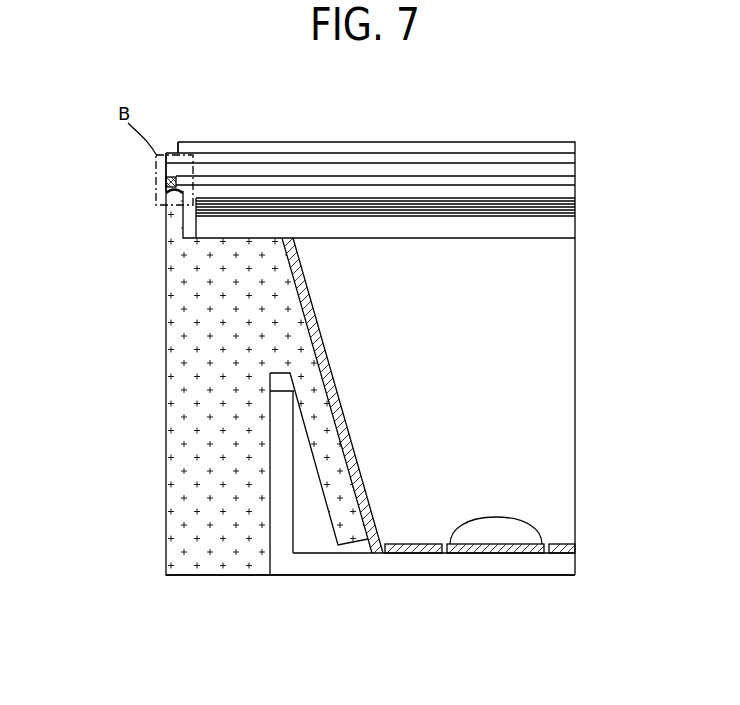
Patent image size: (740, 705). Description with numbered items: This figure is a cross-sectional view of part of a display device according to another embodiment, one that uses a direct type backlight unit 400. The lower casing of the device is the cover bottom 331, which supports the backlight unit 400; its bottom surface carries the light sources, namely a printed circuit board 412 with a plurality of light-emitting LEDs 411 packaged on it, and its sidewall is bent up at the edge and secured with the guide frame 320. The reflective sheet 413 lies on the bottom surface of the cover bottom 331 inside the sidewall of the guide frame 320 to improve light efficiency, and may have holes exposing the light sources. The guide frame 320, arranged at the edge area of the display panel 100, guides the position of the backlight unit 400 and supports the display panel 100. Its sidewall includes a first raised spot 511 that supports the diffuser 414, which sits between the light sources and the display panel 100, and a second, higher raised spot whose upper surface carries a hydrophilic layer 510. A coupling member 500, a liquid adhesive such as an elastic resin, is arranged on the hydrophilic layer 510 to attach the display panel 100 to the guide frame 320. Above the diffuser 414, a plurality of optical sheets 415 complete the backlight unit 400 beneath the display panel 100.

The display panel 100 is at (512, 134).
The coupling member 500 is at (166, 170).
The hydrophilic layer 510 is at (175, 189).
The first raised spot 511 is at (222, 243).
The guide frame 320 is at (175, 320).
The cover bottom 331 is at (563, 564).
The backlight unit 400 is at (446, 432).
The diffuser 414 is at (566, 227).
The optical sheets 415 is at (575, 202).
The reflective sheet 413 is at (395, 553).
The printed circuit board 412 is at (475, 547).
The LEDs 411 is at (497, 576).